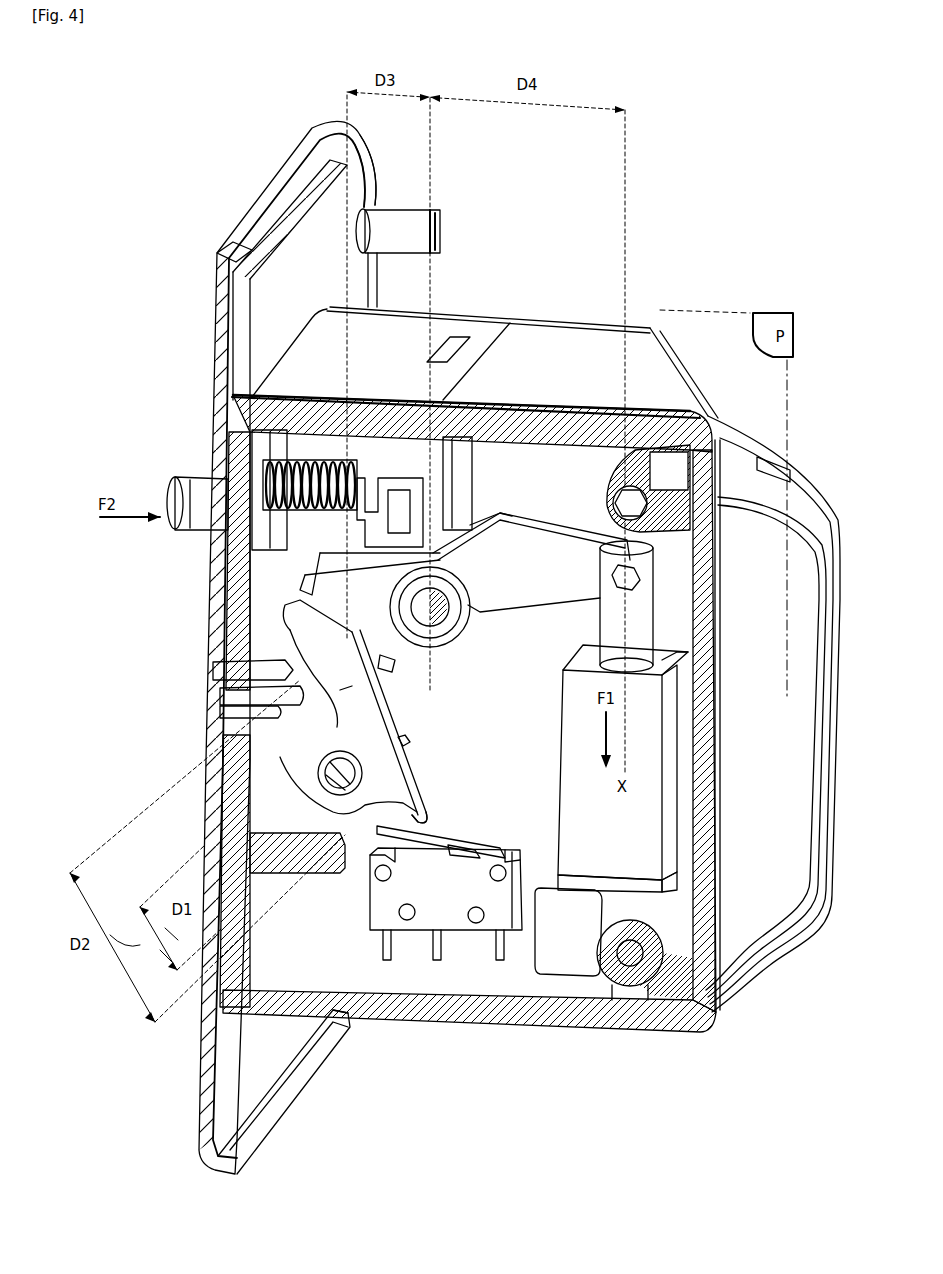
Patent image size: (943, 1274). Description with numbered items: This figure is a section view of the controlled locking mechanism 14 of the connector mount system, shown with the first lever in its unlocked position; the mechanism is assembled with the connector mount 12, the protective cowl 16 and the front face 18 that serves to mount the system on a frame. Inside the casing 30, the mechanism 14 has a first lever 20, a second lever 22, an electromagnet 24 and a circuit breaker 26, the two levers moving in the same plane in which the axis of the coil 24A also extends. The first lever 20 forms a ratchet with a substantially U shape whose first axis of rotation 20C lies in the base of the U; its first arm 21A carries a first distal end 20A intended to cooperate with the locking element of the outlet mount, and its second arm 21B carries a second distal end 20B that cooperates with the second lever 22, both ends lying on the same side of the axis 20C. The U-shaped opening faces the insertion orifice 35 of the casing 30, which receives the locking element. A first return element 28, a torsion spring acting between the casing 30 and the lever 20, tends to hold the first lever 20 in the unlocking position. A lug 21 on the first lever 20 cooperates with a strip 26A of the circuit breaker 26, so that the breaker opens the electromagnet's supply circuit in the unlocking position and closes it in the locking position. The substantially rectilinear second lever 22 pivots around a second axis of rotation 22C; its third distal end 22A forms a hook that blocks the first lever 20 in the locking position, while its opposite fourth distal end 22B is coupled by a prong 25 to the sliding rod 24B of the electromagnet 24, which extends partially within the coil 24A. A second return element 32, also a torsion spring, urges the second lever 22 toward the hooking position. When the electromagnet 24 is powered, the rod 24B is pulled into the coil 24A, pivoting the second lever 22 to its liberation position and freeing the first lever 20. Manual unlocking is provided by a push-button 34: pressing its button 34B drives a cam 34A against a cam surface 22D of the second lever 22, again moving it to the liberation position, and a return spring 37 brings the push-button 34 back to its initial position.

The connector mount 12 is at (407, 326).
The locking mechanism 14 is at (178, 598).
The cowl 16 is at (582, 327).
The front face 18 is at (376, 182).
The first lever 20 is at (374, 718).
The first distal end 20A is at (218, 700).
The second distal end 20B is at (280, 615).
The first axis of rotation 20C is at (318, 804).
The lug 21 is at (428, 798).
The first arm 21A is at (225, 740).
The second arm 21B is at (352, 670).
The second lever 22 is at (555, 533).
The third distal end 22A is at (302, 575).
The fourth distal end 22B is at (700, 560).
The second axis of rotation 22C is at (385, 658).
The cam surface 22D is at (472, 522).
The electromagnet 24 is at (657, 747).
The coil 24A is at (637, 805).
The sliding rod 24B is at (705, 614).
The prong 25 is at (598, 582).
The circuit breaker 26 is at (368, 902).
The strip 26A is at (433, 833).
The first return element 28 is at (410, 741).
The casing 30 is at (716, 428).
The second return element 32 is at (478, 613).
The manual mechanical unlocking control 34 is at (240, 421).
The cam 34A is at (422, 538).
The button 34B is at (190, 482).
The insertion orifice 35 is at (212, 680).
The return spring 37 is at (312, 470).